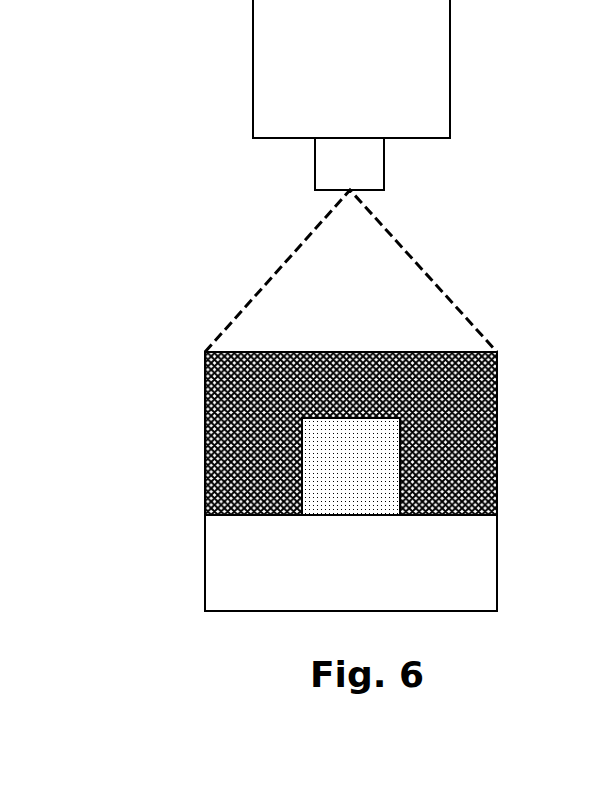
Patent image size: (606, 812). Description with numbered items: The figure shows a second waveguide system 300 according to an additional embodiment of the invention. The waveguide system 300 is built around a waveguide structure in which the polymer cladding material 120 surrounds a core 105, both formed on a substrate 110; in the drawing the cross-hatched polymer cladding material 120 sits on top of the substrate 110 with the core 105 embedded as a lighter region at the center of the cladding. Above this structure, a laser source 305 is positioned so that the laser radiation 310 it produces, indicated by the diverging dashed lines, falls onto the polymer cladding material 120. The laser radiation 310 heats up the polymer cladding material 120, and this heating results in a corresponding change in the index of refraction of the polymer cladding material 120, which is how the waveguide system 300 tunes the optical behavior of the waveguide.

The laser source 305 is at (332, 59).
The laser radiation 310 is at (457, 300).
The polymer cladding material 120 is at (488, 420).
The core 105 is at (316, 510).
The substrate 110 is at (433, 602).
The waveguide system 300 is at (104, 403).